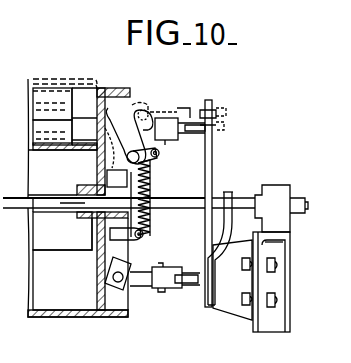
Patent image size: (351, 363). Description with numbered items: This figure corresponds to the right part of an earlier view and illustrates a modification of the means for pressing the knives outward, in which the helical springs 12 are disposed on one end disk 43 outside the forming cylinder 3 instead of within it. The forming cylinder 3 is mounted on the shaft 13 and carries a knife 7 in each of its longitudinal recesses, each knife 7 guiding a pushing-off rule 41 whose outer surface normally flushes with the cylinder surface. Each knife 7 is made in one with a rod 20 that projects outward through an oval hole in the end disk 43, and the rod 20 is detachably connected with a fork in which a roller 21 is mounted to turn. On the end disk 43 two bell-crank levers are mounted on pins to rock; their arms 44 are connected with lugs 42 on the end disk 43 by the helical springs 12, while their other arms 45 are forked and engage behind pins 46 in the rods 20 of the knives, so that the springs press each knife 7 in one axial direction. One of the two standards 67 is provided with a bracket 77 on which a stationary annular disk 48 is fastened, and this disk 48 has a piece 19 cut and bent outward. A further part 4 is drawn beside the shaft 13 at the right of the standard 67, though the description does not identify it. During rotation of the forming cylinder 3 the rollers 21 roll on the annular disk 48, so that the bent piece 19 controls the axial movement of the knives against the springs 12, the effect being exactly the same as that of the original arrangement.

The forming cylinder 3 is at (37, 317).
The cylinder 4 is at (272, 202).
The knife 7 is at (59, 88).
The helical spring 12 is at (152, 196).
The shaft 13 is at (129, 218).
The cut and bent piece 19 is at (224, 225).
The rod 20 is at (139, 278).
The roller 21 is at (195, 289).
The pushing-off rule 41 is at (78, 122).
The lug 42 is at (145, 233).
The end disk 43 is at (93, 229).
The bell-crank lever arm 44 is at (160, 157).
The forked arm 45 is at (129, 270).
The pin 46 is at (134, 284).
The annular disk 48 is at (209, 153).
The standard 67 is at (262, 287).
The bracket 77 is at (234, 298).